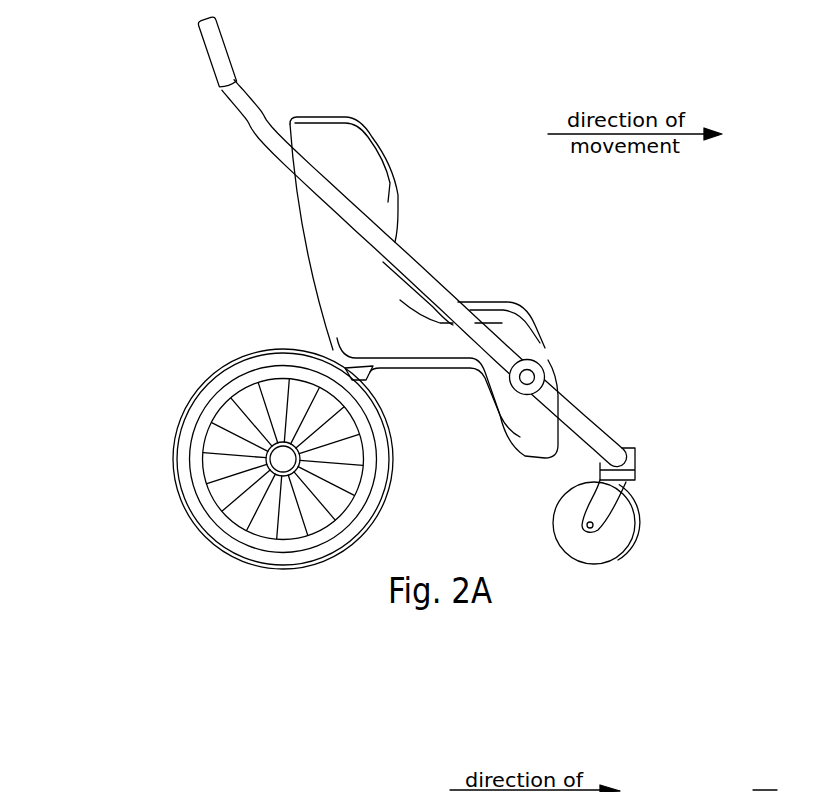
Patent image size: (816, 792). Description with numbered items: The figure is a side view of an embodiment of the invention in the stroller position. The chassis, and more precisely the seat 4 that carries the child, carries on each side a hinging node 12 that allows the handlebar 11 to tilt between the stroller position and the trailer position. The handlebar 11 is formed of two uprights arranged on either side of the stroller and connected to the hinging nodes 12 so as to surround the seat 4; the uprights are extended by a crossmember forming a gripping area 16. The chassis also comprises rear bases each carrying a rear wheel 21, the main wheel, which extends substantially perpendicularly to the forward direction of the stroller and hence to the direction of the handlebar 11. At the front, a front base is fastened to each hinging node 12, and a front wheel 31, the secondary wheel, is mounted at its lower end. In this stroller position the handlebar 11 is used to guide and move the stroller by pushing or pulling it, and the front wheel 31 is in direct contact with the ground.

The seat 4 is at (360, 155).
The handlebar 11 is at (282, 157).
The hinging node 12 is at (528, 377).
The gripping area 16 is at (205, 40).
The rear wheel 21 is at (222, 380).
The front wheel 31 is at (620, 535).